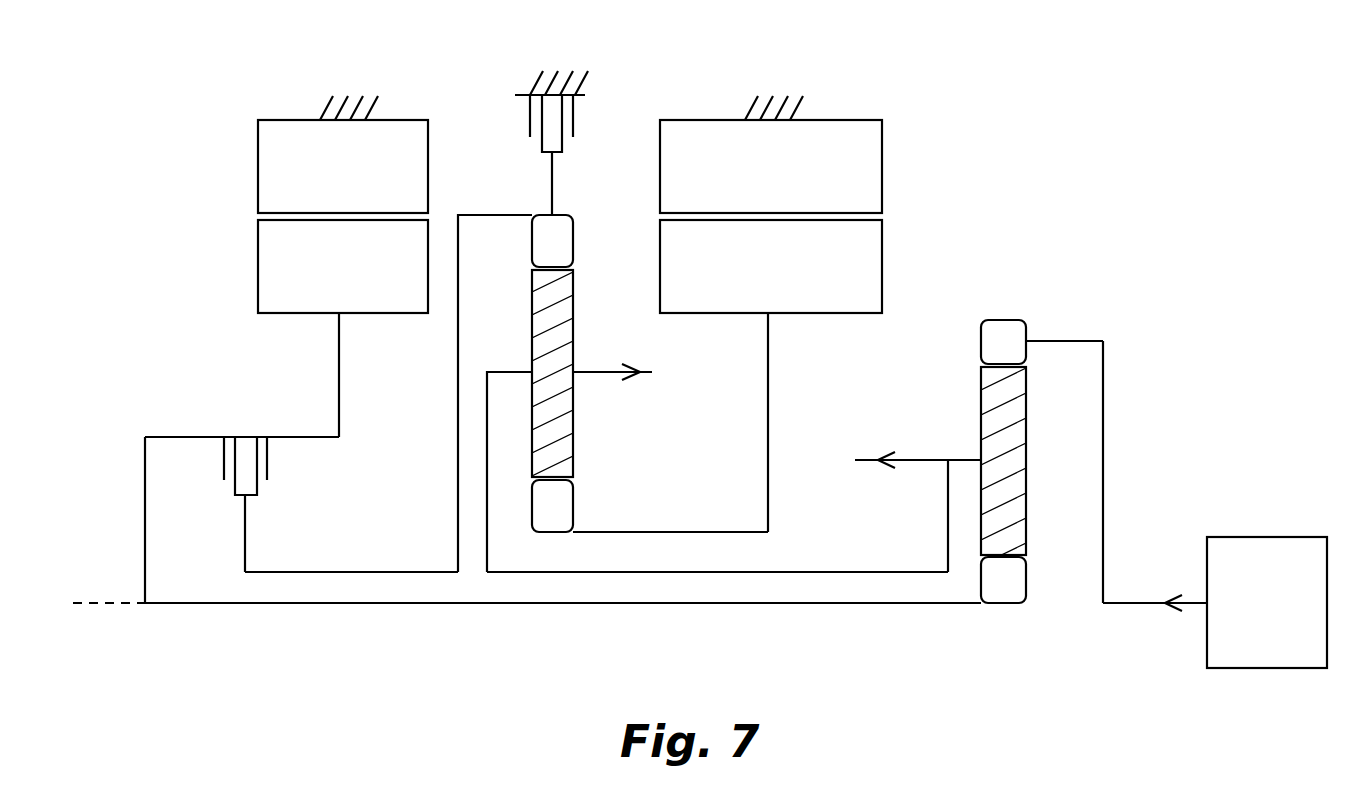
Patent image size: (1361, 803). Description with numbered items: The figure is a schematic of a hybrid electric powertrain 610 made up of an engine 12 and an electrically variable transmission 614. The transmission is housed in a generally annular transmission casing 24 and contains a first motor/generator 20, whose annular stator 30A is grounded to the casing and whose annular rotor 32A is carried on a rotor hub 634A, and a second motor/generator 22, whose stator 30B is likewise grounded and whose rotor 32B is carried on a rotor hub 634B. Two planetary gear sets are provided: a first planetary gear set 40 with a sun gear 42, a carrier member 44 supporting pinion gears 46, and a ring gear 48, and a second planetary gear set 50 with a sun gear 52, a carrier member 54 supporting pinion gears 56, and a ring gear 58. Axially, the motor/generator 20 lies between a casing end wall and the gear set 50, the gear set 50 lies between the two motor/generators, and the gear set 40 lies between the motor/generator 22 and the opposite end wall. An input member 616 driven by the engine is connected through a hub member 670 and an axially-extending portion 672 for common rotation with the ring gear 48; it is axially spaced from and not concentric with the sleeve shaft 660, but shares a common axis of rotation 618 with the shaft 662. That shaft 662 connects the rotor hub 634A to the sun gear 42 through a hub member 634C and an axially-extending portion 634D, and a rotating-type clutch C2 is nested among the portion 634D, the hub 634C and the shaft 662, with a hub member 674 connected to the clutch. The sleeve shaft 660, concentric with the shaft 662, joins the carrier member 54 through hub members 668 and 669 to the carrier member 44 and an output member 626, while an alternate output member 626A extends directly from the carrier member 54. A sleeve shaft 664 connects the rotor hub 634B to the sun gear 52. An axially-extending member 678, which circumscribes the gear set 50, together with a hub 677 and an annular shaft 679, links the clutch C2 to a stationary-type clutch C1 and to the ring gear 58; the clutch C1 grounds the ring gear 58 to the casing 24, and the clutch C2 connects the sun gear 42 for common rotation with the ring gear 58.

The powertrain 610 is at (952, 112).
The electrically variable transmission 614 is at (250, 87).
The input member 616 is at (1138, 605).
The axis of rotation 618 is at (106, 607).
The engine 12 is at (1267, 602).
The first motor/generator 20 is at (238, 222).
The second motor/generator 22 is at (893, 214).
The transmission casing 24 is at (324, 118).
The annular stator 30A is at (343, 166).
The annular rotor 32A is at (343, 266).
The annular stator 30B is at (771, 166).
The annular rotor 32B is at (771, 266).
The first planetary gear set 40 is at (1032, 477).
The sun gear 42 is at (1028, 588).
The carrier member 44 is at (955, 458).
The pinion gears 46 is at (1028, 437).
The ring gear 48 is at (987, 318).
The second planetary gear set 50 is at (600, 428).
The sun gear 52 is at (575, 510).
The carrier member 54 is at (508, 370).
The pinion gears 56 is at (575, 300).
The ring gear 58 is at (575, 243).
The stationary-type clutch C1 is at (587, 108).
The rotating-type clutch C2 is at (273, 487).
The output member 626 is at (920, 457).
The alternate output member 626A is at (595, 375).
The rotor hub 634A is at (338, 372).
The rotor hub 634B is at (770, 346).
The hub member 634C is at (145, 503).
The axially-extending portion 634D is at (180, 435).
The sleeve shaft 660 is at (818, 571).
The shaft 662 is at (672, 605).
The sleeve shaft 664 is at (722, 531).
The hub member 668 is at (487, 442).
The hub member 669 is at (947, 500).
The hub member 670 is at (1104, 462).
The axially-extending portion 672 is at (1066, 340).
The hub member 674 is at (245, 534).
The hub 677 is at (457, 378).
The axially-extending member 678 is at (496, 212).
The axial-extending member 679 is at (436, 572).